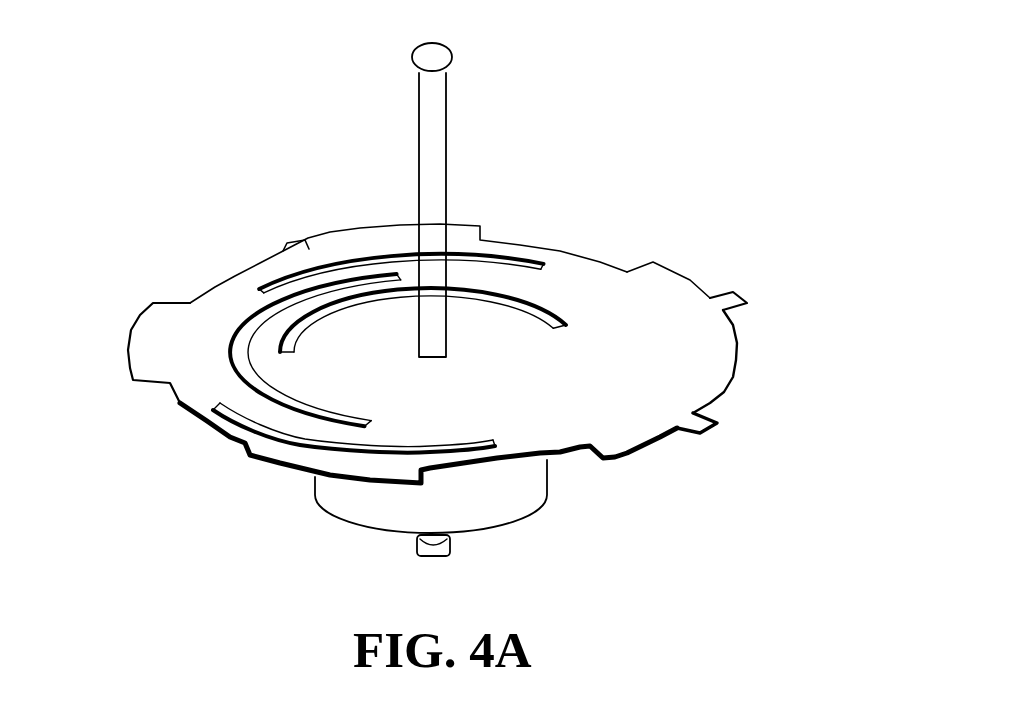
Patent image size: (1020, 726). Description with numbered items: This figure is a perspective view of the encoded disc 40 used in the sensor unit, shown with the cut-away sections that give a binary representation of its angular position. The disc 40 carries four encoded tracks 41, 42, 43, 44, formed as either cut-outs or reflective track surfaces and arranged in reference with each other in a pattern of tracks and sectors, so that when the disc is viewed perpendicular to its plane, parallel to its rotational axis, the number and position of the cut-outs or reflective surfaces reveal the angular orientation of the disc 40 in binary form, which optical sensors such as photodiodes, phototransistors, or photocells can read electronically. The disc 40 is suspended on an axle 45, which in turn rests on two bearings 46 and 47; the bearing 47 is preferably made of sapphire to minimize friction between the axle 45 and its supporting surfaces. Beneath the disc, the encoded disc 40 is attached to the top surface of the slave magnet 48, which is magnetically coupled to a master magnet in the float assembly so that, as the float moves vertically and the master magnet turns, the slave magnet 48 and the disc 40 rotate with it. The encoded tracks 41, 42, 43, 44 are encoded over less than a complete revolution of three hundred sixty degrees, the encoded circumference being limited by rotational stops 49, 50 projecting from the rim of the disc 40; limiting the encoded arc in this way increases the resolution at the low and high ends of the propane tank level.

The encoded disc 40 is at (143, 350).
The encoded track 41 is at (188, 282).
The encoded track 42 is at (310, 255).
The encoded track 43 is at (366, 260).
The encoded track 44 is at (284, 352).
The axle 45 is at (448, 127).
The bearing 46 is at (458, 57).
The bearing 47 is at (455, 568).
The slave magnet 48 is at (535, 515).
The rotational stop 49 is at (737, 437).
The rotational stop 50 is at (765, 290).